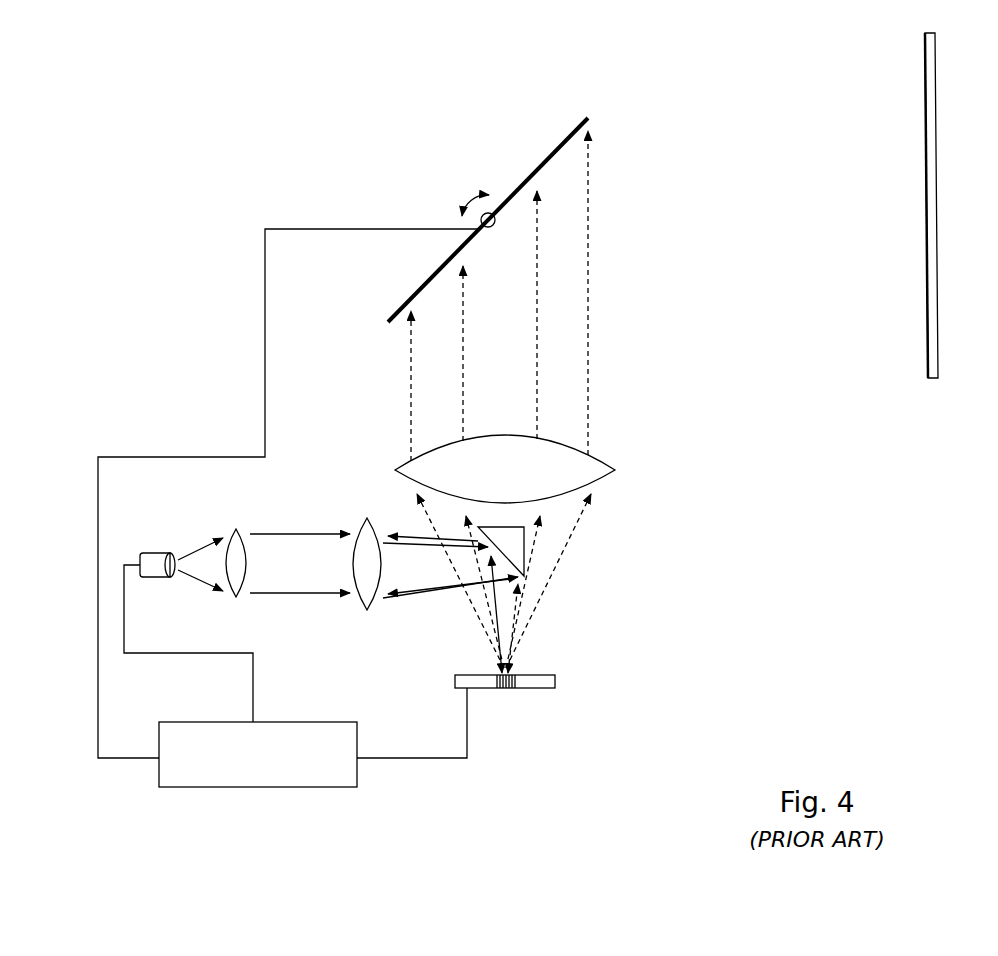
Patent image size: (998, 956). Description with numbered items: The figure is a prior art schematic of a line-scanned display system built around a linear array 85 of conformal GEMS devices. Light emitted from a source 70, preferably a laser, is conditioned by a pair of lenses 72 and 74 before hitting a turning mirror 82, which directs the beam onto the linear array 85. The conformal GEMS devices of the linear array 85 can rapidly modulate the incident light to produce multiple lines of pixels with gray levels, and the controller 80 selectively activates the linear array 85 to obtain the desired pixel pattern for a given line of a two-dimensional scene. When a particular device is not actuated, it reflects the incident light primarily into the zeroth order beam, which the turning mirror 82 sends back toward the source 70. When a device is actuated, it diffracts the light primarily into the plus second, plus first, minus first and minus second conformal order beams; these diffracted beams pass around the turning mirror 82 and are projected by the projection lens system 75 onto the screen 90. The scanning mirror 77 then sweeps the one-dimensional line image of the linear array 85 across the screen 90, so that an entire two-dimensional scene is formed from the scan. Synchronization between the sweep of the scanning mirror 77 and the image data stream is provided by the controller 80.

The source 70 is at (147, 541).
The lens 72 is at (238, 523).
The lens 74 is at (362, 512).
The projection lens system 75 is at (408, 457).
The scanning mirror 77 is at (543, 152).
The controller 80 is at (155, 770).
The turning mirror 82 is at (528, 539).
The linear array 85 is at (541, 692).
The screen 90 is at (919, 353).